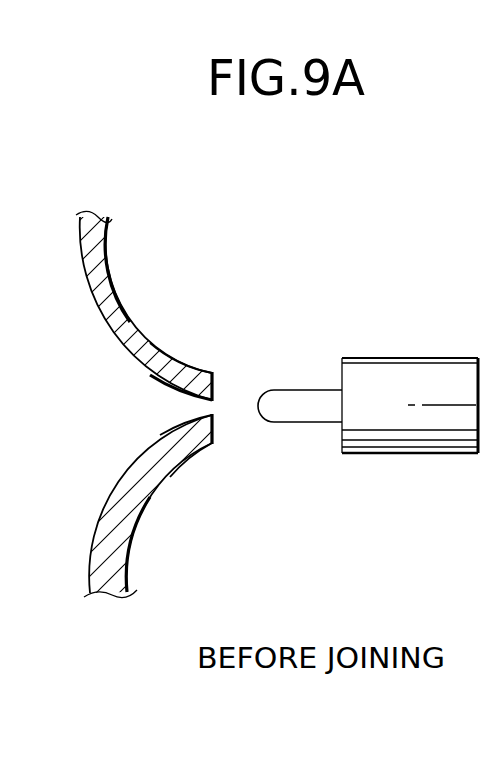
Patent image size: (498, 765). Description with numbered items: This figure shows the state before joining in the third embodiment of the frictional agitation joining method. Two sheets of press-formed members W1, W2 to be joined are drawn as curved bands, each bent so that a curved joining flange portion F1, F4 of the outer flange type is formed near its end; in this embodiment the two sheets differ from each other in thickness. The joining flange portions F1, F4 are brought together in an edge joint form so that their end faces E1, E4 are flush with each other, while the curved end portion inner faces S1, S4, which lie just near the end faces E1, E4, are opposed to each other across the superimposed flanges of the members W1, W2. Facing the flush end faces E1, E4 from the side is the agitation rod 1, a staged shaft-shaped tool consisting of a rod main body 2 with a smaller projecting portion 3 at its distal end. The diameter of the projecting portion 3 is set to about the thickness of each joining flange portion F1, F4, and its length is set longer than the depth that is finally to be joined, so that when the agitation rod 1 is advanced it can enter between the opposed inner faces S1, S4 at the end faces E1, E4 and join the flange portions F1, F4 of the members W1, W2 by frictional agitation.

The agitation rod 1 is at (406, 354).
The rod main body 2 is at (449, 434).
The projecting portion 3 is at (308, 389).
The member to be joined W1 is at (110, 246).
The member to be joined W2 is at (131, 560).
The end face E1 is at (217, 381).
The end face of second workpiece E4 is at (214, 430).
The curved end portion inner face S1 is at (203, 399).
The surface of second workpiece S4 is at (197, 414).
The joining flange portion F1 is at (189, 366).
The joining flange portion F4 is at (198, 455).